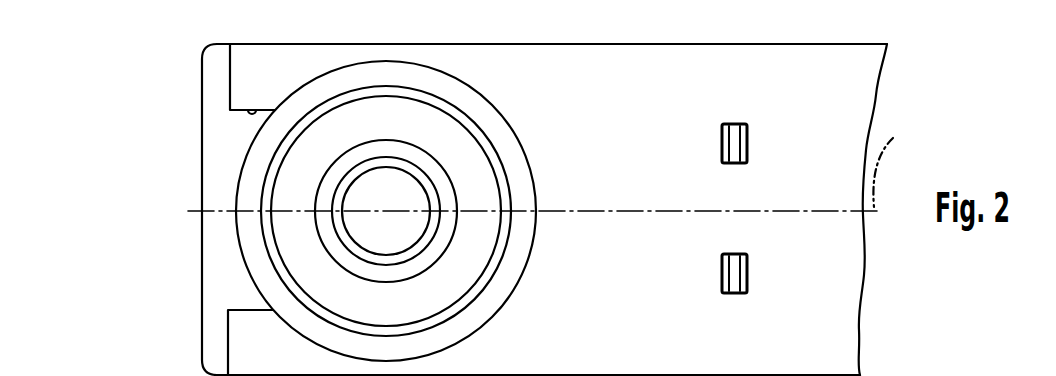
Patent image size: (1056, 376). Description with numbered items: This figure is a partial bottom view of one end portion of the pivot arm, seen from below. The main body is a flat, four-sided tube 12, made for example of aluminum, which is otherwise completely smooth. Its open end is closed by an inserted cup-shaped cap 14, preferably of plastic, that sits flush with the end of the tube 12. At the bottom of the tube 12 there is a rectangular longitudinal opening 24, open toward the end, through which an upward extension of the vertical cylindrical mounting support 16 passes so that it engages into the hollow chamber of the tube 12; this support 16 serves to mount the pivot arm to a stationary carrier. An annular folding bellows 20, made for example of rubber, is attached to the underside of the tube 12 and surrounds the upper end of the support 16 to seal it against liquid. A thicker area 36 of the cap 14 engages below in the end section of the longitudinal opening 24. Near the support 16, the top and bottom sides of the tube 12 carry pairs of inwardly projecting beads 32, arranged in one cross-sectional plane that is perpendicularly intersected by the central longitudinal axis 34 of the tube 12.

The flat four-sided tube 12 is at (612, 44).
The cap 14 is at (202, 337).
The cylindrical mounting support 16 is at (440, 256).
The annular folding bellows 20 is at (238, 171).
The longitudinal opening 24 is at (257, 108).
The inwardly projecting beads 32 is at (749, 136).
The central longitudinal axis 34 is at (899, 168).
The thicker area 36 is at (243, 297).